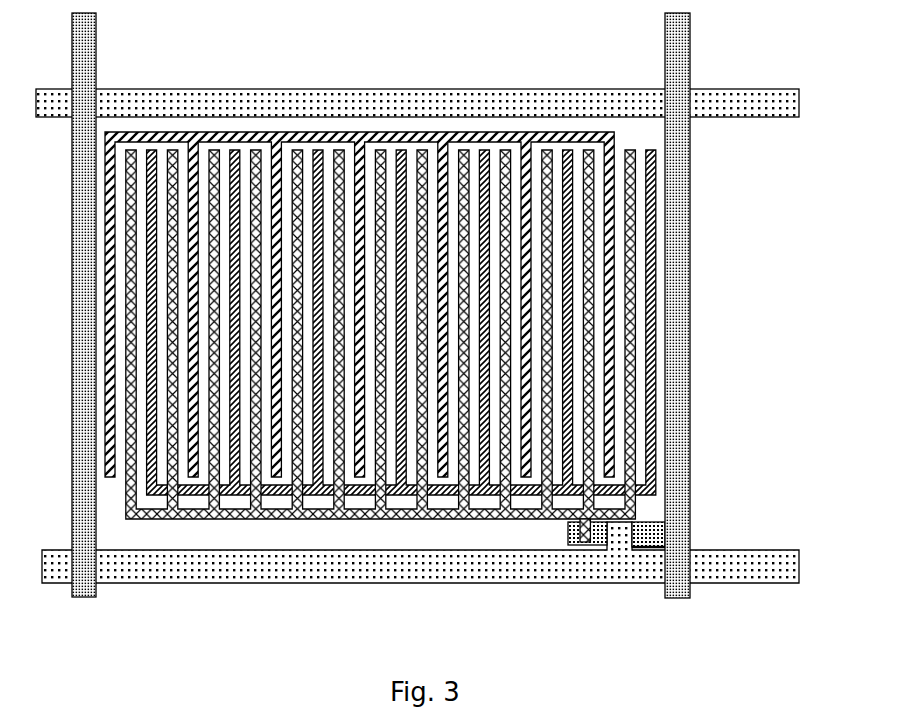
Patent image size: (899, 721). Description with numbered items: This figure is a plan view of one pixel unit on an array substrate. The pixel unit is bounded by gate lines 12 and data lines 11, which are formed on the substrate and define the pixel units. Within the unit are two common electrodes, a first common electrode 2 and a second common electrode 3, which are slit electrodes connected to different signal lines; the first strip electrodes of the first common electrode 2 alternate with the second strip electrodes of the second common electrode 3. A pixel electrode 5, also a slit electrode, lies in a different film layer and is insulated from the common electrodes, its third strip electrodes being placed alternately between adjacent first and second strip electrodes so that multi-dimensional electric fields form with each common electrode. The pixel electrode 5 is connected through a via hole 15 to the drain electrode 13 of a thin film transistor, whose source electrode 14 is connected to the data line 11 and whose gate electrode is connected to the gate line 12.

The first common electrode 2 is at (614, 142).
The second common electrode 3 is at (650, 368).
The pixel electrode 5 is at (452, 517).
The data line 11 is at (688, 467).
The gate line 12 is at (710, 557).
The drain electrode 13 is at (565, 538).
The source electrode 14 is at (642, 548).
The via hole 15 is at (583, 543).